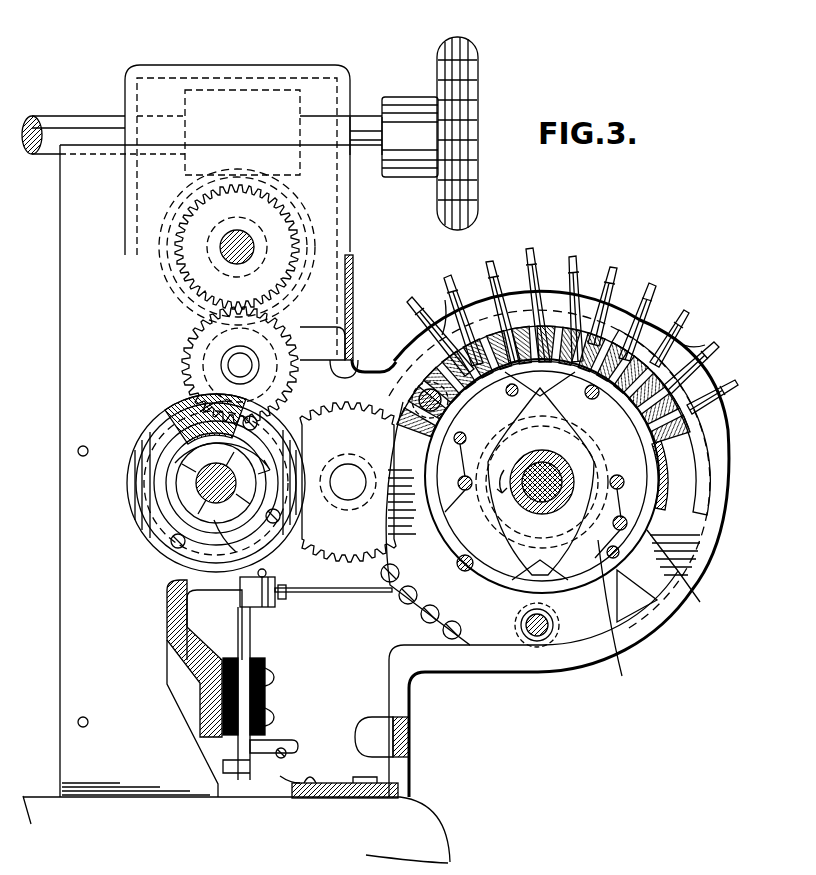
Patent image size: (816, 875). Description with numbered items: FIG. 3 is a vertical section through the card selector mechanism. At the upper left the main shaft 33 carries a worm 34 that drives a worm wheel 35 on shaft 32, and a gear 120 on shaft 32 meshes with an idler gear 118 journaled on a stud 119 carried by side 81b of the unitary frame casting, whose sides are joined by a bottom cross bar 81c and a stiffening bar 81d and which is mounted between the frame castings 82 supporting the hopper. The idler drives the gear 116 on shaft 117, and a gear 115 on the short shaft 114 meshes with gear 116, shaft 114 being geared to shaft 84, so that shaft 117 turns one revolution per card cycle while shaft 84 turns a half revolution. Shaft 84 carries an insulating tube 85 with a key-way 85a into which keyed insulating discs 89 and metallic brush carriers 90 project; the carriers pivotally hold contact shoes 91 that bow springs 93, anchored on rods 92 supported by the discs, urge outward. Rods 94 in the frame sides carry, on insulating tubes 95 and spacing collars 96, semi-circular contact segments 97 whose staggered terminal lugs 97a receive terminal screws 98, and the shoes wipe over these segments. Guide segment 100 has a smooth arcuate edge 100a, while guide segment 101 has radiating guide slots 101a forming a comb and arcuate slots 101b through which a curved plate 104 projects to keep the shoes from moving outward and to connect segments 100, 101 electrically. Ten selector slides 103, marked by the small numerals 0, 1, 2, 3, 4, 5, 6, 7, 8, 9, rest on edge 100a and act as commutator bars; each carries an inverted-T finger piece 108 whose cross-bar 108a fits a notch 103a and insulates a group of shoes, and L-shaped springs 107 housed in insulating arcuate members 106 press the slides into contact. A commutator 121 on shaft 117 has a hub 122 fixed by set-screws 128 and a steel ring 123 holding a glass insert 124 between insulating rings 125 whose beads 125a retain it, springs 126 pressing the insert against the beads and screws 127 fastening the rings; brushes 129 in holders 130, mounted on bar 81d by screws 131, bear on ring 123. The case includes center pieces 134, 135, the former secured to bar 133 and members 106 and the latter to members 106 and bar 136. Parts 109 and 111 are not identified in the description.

The main shaft 33 is at (85, 124).
The worm 34 is at (248, 92).
The shaft 32 is at (248, 236).
The worm wheel 35 is at (352, 222).
The gear 120 is at (178, 241).
The bar 136 is at (345, 330).
The center piece 135 is at (338, 376).
The stud 119 is at (238, 368).
The idler gear 118 is at (196, 370).
The steel ring 123 is at (212, 404).
The glass insert 124 is at (186, 416).
The beads 125a is at (140, 446).
The rings 125 is at (168, 514).
The springs 126 is at (168, 466).
The shaft 117 is at (196, 484).
The screws 127 is at (192, 522).
The set-screws 128 is at (233, 542).
The frame castings 82 is at (62, 555).
The gear 116 is at (172, 560).
The commutator 121 is at (135, 578).
The hub 122 is at (205, 522).
The brushes 129 is at (266, 577).
The brush holders 130 is at (273, 606).
The stiffening bar 81d is at (190, 640).
The screws 131 is at (276, 716).
The bar 133 is at (378, 745).
The bottom cross bar 81c is at (318, 800).
The side 81b is at (402, 686).
The center piece 134 is at (650, 640).
The guide segment 101 is at (716, 556).
The guide slots 101a is at (432, 378).
The arcuate slots 101b is at (680, 478).
The arcuate members 106 is at (712, 432).
The guide segment 100 is at (446, 552).
The arcuate guide edge 100a is at (696, 565).
The curved plate 104 is at (660, 495).
The brush carriers 90 is at (578, 420).
The discs 89 is at (652, 462).
The contact shoes 91 is at (592, 400).
The tube 85 is at (516, 508).
The shaft 84 is at (574, 470).
The key-way 85a is at (541, 456).
The bow springs 93 is at (472, 438).
The rods 92 is at (460, 512).
The rods 94 is at (418, 398).
The long tubes 95 is at (554, 622).
The spacing collars 96 is at (410, 420).
The terminal screws 98 is at (382, 580).
The contact segments 97 is at (402, 602).
The terminal lugs 97a is at (422, 620).
The gear 115 is at (326, 416).
The short shaft 114 is at (348, 500).
The index point position numeral 0 is at (435, 334).
The index point position numeral 1 is at (457, 315).
The index point position numeral 2 is at (498, 306).
The index point position numeral 3 is at (536, 301).
The index point position numeral 4 is at (574, 306).
The index point position numeral 5 is at (608, 304).
The index point position numeral 6 is at (642, 322).
The index point position numeral 7 is at (675, 336).
The index point position numeral 8 is at (695, 367).
The index point position numeral 9 is at (718, 396).
The pin 111 is at (434, 312).
The selector slides 103 is at (508, 266).
The notch 103a is at (565, 268).
The finger piece 108 is at (600, 272).
The cross-bar 108a is at (588, 300).
The pin 109 is at (622, 292).
The L-shaped springs 107 is at (665, 318).